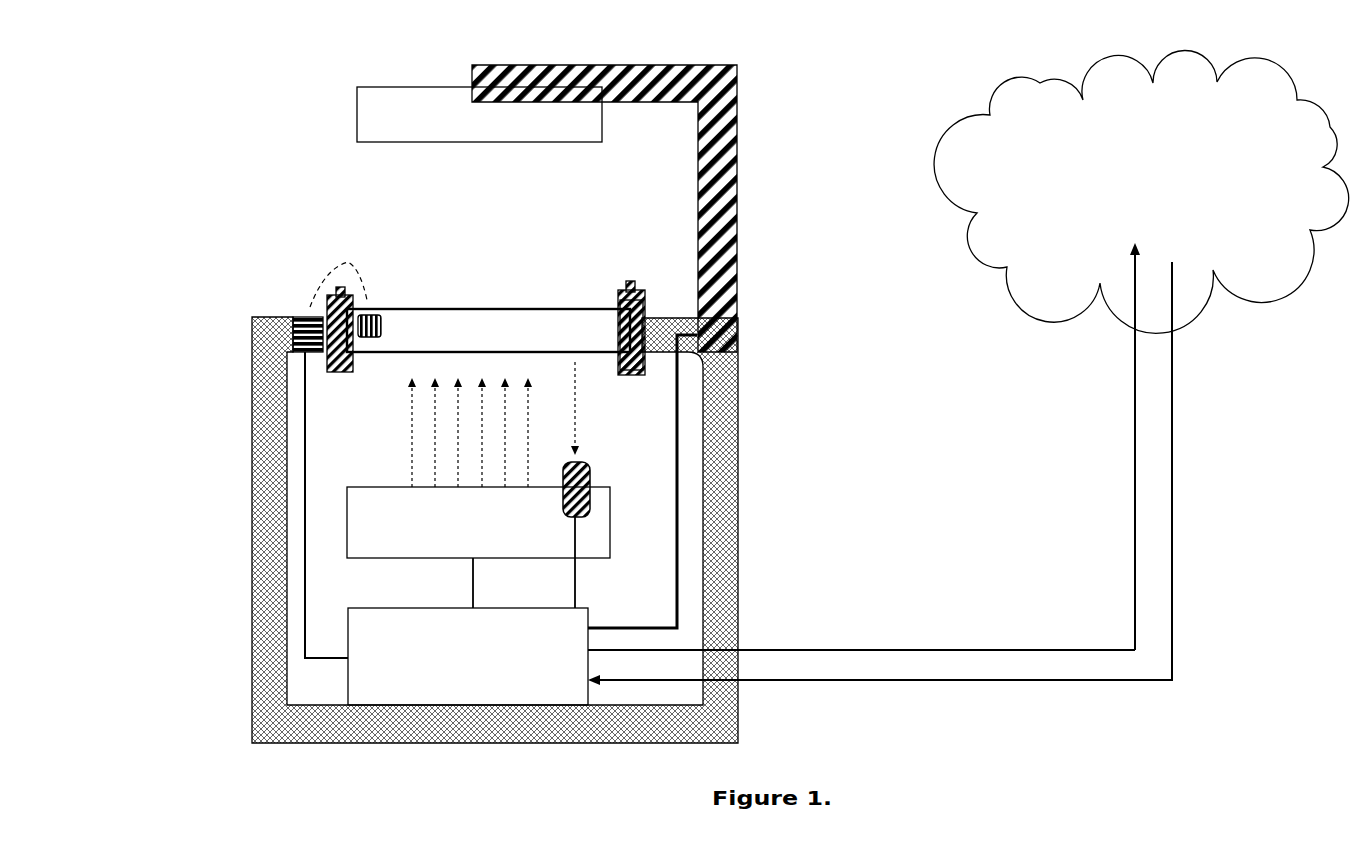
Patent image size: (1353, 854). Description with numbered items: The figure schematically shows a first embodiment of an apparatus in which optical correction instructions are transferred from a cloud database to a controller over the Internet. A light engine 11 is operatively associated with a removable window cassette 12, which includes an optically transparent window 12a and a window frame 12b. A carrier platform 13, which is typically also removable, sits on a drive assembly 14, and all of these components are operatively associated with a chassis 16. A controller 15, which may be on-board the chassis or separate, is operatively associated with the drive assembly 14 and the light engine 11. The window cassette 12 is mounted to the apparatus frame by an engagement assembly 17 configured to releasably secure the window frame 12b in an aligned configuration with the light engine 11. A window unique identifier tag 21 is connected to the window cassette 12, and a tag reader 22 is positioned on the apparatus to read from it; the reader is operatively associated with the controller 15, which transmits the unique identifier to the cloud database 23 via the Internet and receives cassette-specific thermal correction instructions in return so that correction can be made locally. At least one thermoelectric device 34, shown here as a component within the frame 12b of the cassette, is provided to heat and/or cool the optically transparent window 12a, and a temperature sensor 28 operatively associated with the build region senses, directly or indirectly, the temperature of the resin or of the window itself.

The light engine 11 is at (478, 468).
The removable window cassette 12 is at (537, 361).
The optically transparent window 12a is at (488, 330).
The window frame 12b is at (330, 305).
The carrier platform 13 is at (479, 114).
The drive assembly 14 is at (742, 185).
The controller 15 is at (501, 520).
The chassis 16 is at (723, 553).
The engagement assembly 17 is at (640, 312).
The window unique identifier tag 21 is at (383, 327).
The tag reader 22 is at (293, 350).
The cloud database 23 is at (968, 368).
The temperature sensor 28 is at (592, 476).
The thermoelectric device 34 is at (352, 362).